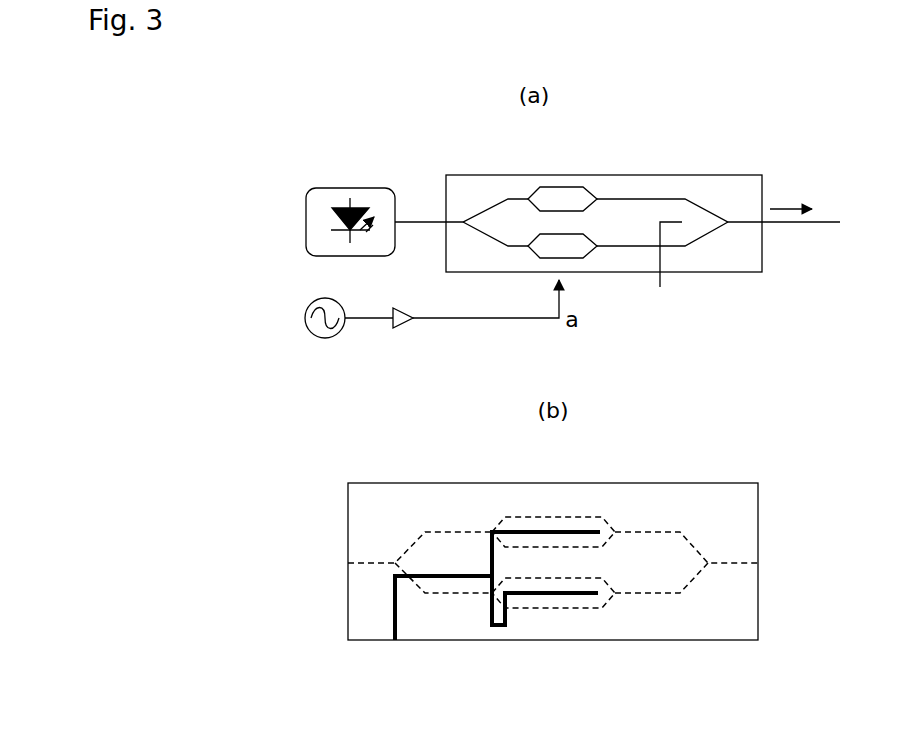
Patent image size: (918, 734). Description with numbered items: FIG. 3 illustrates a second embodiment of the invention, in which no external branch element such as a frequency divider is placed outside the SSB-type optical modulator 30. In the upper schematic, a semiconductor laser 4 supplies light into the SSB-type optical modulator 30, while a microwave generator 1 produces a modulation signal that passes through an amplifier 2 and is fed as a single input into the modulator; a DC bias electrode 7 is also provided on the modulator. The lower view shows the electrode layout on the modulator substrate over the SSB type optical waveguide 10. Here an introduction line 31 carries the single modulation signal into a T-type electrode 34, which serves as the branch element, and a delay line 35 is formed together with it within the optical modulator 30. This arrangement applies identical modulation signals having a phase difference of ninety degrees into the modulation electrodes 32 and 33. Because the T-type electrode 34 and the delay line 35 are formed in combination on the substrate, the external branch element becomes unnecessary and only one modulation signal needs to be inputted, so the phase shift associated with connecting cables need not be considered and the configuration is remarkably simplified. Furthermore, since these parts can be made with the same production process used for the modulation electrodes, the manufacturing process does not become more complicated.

The microwave generator 1 is at (323, 338).
The amplifier 2 is at (401, 328).
The semiconductor laser 4 is at (352, 187).
The DC bias electrode 7 is at (664, 280).
The SSB type optical waveguide 10 is at (686, 598).
The SSB-type optical modulator 30 is at (668, 175).
The introduction line 31 is at (398, 600).
The modulation electrode 32 is at (557, 595).
The modulation electrode 33 is at (557, 530).
The T-type electrode 34 is at (492, 576).
The delay line 35 is at (504, 635).